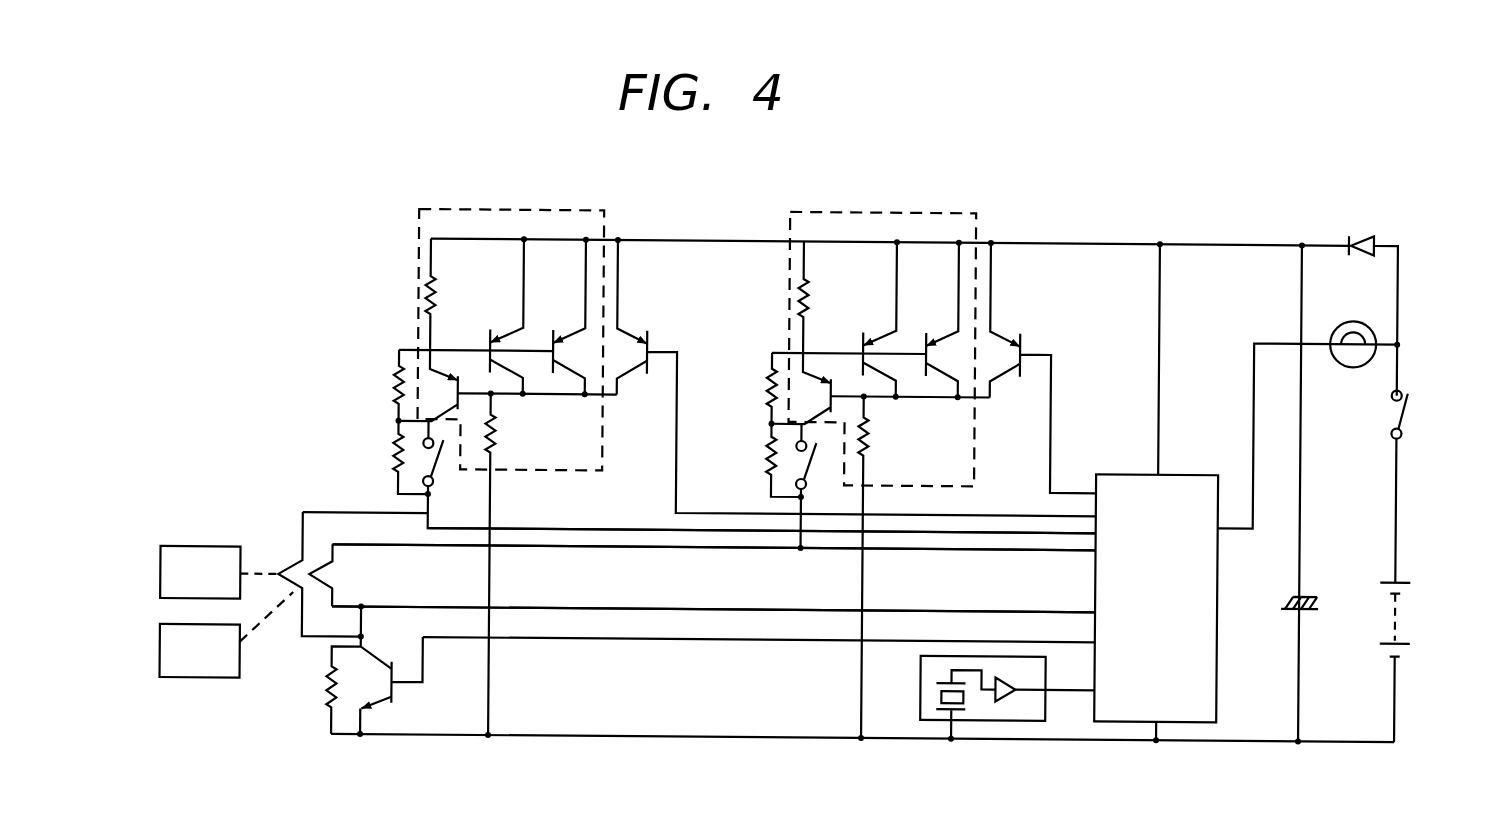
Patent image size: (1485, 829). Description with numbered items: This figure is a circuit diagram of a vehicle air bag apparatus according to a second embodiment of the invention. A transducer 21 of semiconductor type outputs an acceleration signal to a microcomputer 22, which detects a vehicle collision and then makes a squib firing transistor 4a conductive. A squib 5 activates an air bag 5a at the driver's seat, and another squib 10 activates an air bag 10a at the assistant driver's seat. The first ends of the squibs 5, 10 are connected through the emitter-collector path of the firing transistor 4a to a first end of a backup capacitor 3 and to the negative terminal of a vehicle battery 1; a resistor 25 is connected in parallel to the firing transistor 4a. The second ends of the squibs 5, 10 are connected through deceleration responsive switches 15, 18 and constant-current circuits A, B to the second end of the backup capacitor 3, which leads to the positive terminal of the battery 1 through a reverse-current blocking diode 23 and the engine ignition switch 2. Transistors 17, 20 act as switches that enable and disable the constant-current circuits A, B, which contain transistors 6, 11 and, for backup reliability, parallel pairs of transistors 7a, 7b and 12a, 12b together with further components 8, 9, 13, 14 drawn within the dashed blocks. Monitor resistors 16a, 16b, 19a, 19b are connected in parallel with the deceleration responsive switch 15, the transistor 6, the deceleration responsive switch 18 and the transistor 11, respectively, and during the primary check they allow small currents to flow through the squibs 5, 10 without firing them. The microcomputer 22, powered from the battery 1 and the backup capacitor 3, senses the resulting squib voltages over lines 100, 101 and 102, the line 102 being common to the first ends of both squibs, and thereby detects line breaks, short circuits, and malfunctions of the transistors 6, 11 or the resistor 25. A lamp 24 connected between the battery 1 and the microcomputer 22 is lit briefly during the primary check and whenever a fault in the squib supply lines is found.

The vehicle battery 1 is at (1411, 574).
The vehicle engine ignition switch 2 is at (1406, 416).
The backup capacitor 3 is at (1278, 604).
The squib firing transistor 4a is at (385, 702).
The squib 5 is at (297, 566).
The air bag 5a is at (205, 551).
The transistor 6 is at (450, 368).
The transistor 7a is at (506, 330).
The transistor 7b is at (568, 330).
The resistor 8 is at (439, 292).
The resistor 9 is at (500, 432).
The squib 10 is at (333, 575).
The air bag 10a is at (191, 682).
The transistor 11 is at (827, 368).
The transistor 12a is at (880, 332).
The transistor 12b is at (942, 332).
The resistor 13 is at (808, 300).
The resistor 14 is at (877, 433).
The deceleration responsive switch 15 is at (760, 477).
The monitor resistor 16a is at (385, 447).
The monitor resistor 16b is at (385, 389).
The transistor 17 is at (640, 327).
The deceleration responsive switch 18 is at (819, 486).
The monitor resistor 19a is at (765, 444).
The monitor resistor 19b is at (765, 386).
The transistor 20 is at (1000, 334).
The transducer 21 is at (920, 701).
The microcomputer 22 is at (1219, 706).
The reverse-current blocking diode 23 is at (1362, 232).
The lamp 24 is at (1352, 317).
The resistor 25 is at (325, 694).
The line 100 is at (558, 525).
The line 101 is at (582, 552).
The line 102 is at (671, 609).
The constant-current circuit A is at (559, 209).
The constant-current circuit B is at (936, 210).